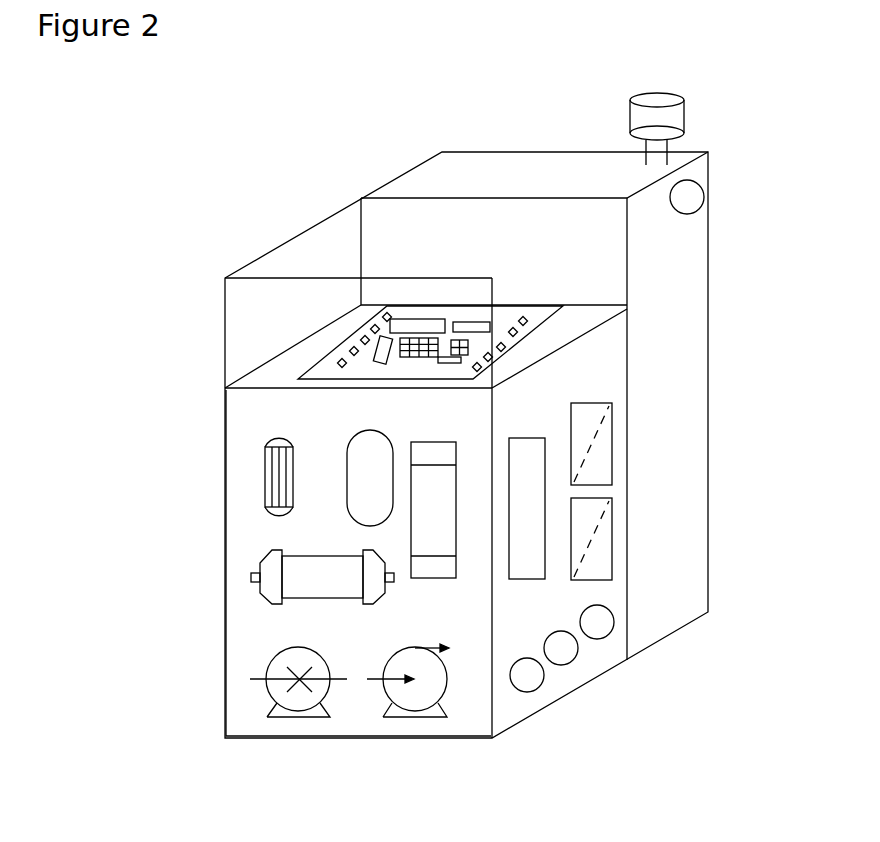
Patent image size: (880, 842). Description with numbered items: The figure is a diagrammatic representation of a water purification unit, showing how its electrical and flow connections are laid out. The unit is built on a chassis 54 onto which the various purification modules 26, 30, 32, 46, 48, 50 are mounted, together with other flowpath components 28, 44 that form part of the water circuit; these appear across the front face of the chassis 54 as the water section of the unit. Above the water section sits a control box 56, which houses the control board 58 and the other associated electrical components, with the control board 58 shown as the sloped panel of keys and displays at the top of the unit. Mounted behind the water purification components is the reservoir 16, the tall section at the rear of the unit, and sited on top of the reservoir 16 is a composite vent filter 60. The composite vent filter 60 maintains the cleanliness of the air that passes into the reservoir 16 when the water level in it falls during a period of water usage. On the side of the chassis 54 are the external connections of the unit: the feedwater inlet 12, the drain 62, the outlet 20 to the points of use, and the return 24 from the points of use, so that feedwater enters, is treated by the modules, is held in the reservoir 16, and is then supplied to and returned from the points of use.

The feedwater inlet 12 is at (528, 678).
The reservoir 16 is at (682, 402).
The outlet to points of use 20 is at (600, 630).
The return from the points of use 24 is at (706, 183).
The purification module 26 is at (370, 478).
The flowpath component 28 is at (298, 667).
The purification module 30 is at (591, 473).
The purification module 32 is at (279, 459).
The flowpath component 44 is at (408, 670).
The purification module 46 is at (433, 510).
The purification module 48 is at (527, 508).
The purification module 50 is at (322, 577).
The chassis 54 is at (223, 637).
The control box 56 is at (227, 305).
The control board 58 is at (337, 358).
The composite vent filter 60 is at (673, 121).
The drain 62 is at (562, 660).